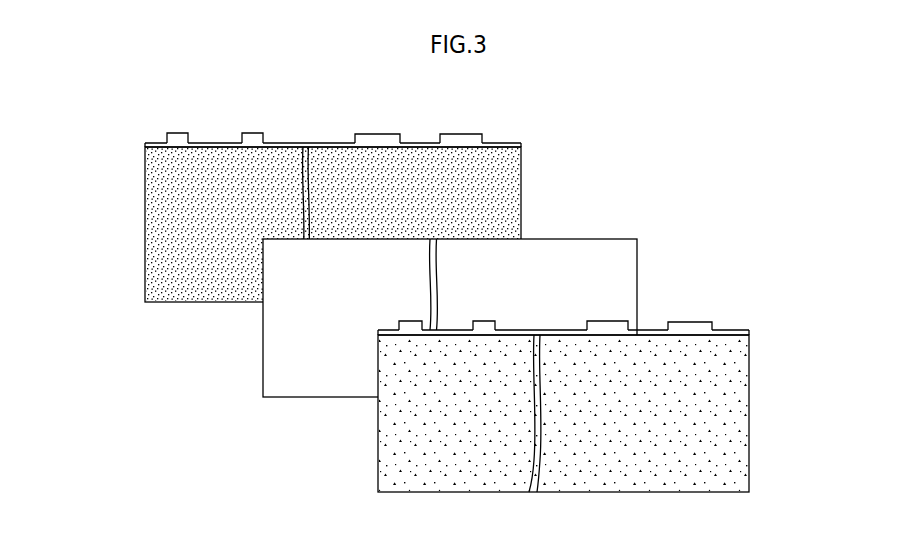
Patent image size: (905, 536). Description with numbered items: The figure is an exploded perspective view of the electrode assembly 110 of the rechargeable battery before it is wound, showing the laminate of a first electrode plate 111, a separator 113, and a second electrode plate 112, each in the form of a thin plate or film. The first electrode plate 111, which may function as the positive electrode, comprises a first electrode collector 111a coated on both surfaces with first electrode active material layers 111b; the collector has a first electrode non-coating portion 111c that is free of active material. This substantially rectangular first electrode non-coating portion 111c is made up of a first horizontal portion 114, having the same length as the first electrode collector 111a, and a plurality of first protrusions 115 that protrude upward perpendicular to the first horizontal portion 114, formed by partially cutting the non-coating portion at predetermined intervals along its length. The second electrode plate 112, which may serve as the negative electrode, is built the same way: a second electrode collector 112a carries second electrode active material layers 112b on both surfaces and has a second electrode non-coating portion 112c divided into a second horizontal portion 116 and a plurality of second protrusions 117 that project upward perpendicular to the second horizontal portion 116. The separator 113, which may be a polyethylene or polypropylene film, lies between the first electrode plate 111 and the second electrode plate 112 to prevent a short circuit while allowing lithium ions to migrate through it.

The electrode assembly 110 is at (678, 110).
The first electrode plate 111 is at (532, 140).
The first electrode collector 111a is at (145, 215).
The first electrode active material layers 111b is at (152, 185).
The first electrode non-coating portion 111c is at (88, 99).
The first horizontal portion 114 is at (146, 143).
The first protrusions 115 is at (173, 132).
The separator 113 is at (648, 238).
The second electrode plate 112 is at (756, 407).
The second electrode collector 112a is at (378, 457).
The second electrode active material layers 112b is at (383, 425).
The second electrode non-coating portion 112c is at (812, 295).
The second horizontal portion 116 is at (750, 335).
The second protrusions 117 is at (712, 323).